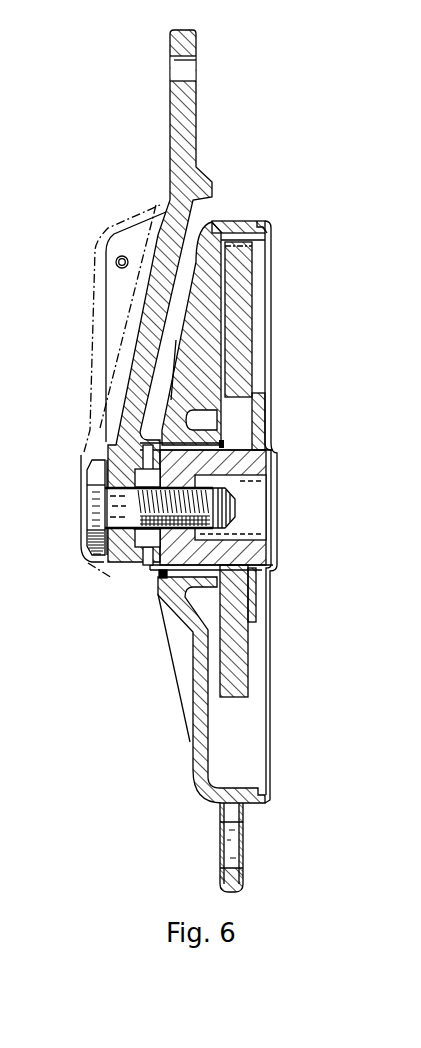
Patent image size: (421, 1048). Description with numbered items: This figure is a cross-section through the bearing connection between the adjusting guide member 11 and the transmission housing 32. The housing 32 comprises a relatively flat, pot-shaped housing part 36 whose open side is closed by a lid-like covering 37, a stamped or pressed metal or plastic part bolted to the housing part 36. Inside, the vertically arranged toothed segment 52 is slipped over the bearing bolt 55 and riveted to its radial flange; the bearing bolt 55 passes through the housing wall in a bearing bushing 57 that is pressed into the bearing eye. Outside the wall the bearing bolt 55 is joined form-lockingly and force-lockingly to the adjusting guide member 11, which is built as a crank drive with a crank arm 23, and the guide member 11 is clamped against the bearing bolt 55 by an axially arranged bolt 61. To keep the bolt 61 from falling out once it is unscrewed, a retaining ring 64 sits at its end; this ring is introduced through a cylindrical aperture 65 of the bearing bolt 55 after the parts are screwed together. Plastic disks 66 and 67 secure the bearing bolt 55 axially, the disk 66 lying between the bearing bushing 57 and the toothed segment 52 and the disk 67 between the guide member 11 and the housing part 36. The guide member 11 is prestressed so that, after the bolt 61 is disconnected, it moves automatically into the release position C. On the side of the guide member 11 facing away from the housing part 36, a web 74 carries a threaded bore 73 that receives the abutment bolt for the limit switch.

The adjusting guide member 11 is at (165, 153).
The crank arm 23 is at (163, 237).
The threaded bore 73 is at (112, 273).
The web 74 is at (115, 313).
The toothed segment 52 is at (243, 263).
The lid-like covering 37 is at (272, 330).
The bearing bushing 57 is at (168, 415).
The disk 66 is at (262, 413).
The bearing bolt 55 is at (272, 447).
The cylindrical aperture 65 is at (253, 480).
The retaining ring 64 is at (227, 496).
The bolt 61 is at (92, 520).
The release position C is at (78, 452).
The disk 67 is at (156, 580).
The housing part 36 is at (158, 595).
The housing 32 is at (186, 745).